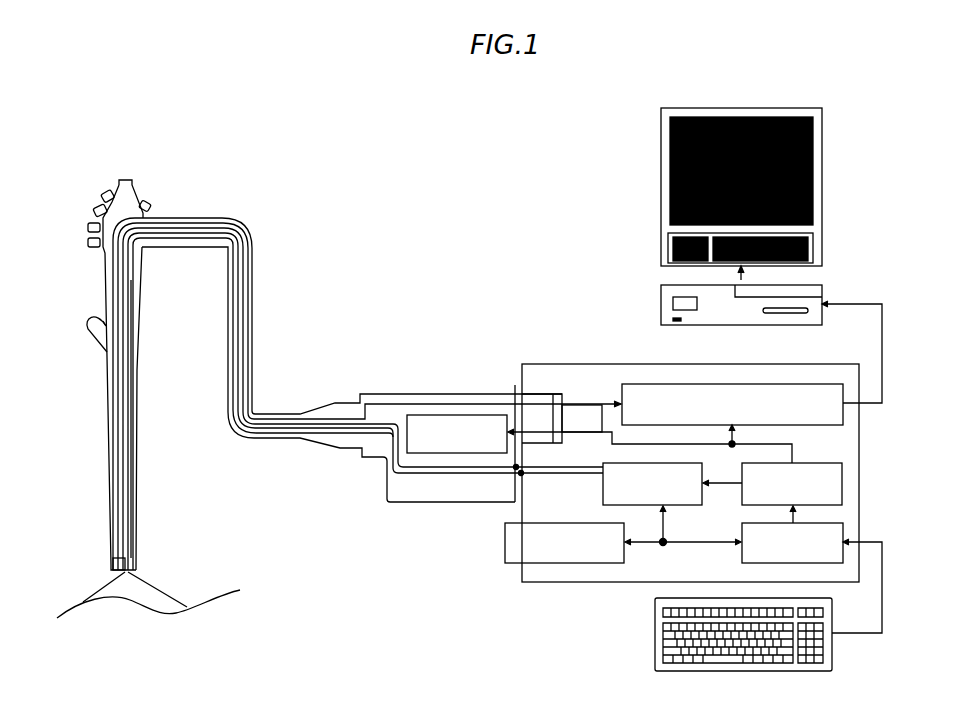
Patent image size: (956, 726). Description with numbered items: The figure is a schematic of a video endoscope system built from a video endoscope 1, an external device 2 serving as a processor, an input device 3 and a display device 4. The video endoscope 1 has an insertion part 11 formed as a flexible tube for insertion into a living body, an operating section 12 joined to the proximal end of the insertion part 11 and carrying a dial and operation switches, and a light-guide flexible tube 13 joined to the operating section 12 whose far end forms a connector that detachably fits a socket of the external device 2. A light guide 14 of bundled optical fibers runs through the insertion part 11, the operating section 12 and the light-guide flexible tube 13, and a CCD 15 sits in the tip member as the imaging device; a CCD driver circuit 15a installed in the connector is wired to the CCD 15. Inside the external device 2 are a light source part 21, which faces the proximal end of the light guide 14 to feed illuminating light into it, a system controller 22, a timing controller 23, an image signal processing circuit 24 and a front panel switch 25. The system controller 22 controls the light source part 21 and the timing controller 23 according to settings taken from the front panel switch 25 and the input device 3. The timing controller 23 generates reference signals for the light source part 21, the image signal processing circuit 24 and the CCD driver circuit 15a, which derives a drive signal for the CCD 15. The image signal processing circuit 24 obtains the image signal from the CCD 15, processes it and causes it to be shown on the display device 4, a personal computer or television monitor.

The video endoscope 1 is at (335, 375).
The insertion part 11 is at (111, 443).
The operating section 12 is at (105, 262).
The light-guide flexible tube 13 is at (253, 301).
The light guide 14 is at (137, 503).
The CCD 15 is at (116, 561).
The CCD driver circuit 15a is at (456, 415).
The external device 2 is at (659, 460).
The light source part 21 is at (603, 489).
The system controller 22 is at (843, 525).
The timing controller 23 is at (842, 481).
The image signal processing circuit 24 is at (728, 384).
The front panel switch 25 is at (505, 541).
The input device 3 is at (655, 636).
The display device 4 is at (826, 251).